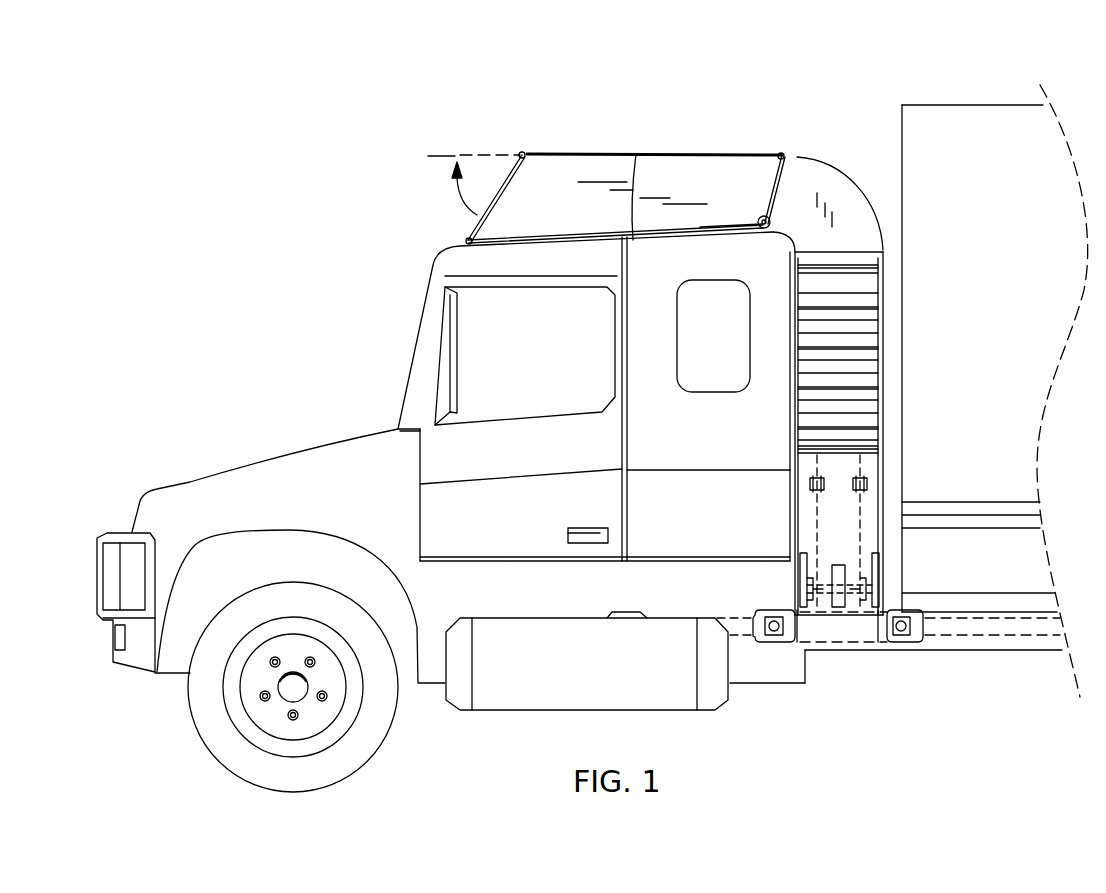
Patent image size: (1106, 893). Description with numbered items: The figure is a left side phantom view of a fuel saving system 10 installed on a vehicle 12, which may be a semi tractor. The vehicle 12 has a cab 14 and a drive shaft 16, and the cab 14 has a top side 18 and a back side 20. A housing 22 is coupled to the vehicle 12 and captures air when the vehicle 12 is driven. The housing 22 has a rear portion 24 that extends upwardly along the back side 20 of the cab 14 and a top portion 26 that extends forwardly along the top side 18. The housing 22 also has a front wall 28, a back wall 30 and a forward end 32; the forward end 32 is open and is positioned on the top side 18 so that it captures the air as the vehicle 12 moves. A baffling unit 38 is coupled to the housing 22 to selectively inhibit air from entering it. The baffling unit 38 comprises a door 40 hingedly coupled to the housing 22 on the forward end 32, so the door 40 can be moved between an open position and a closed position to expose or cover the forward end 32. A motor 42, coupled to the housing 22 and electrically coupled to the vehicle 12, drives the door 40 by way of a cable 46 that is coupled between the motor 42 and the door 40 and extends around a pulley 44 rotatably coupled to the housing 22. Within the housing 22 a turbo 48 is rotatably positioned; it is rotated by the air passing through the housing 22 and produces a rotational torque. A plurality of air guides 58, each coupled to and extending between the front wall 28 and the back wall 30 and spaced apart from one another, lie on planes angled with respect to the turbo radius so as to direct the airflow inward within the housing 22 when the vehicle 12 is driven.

The fuel saving system 10 is at (400, 151).
The vehicle 12 is at (386, 324).
The cab 14 is at (437, 257).
The drive shaft 16 is at (917, 640).
The top side 18 is at (636, 154).
The back side 20 is at (795, 290).
The housing 22 is at (802, 155).
The rear portion 24 is at (883, 248).
The top portion 26 is at (705, 152).
The front wall 28 is at (797, 567).
The back wall 30 is at (880, 560).
The forward end 32 is at (497, 190).
The baffling unit 38 is at (757, 210).
The door 40 is at (477, 223).
The motor 42 is at (757, 218).
The pulley 44 is at (777, 150).
The cable 46 is at (597, 157).
The turbo 48 is at (878, 367).
The air guides 58 is at (857, 288).